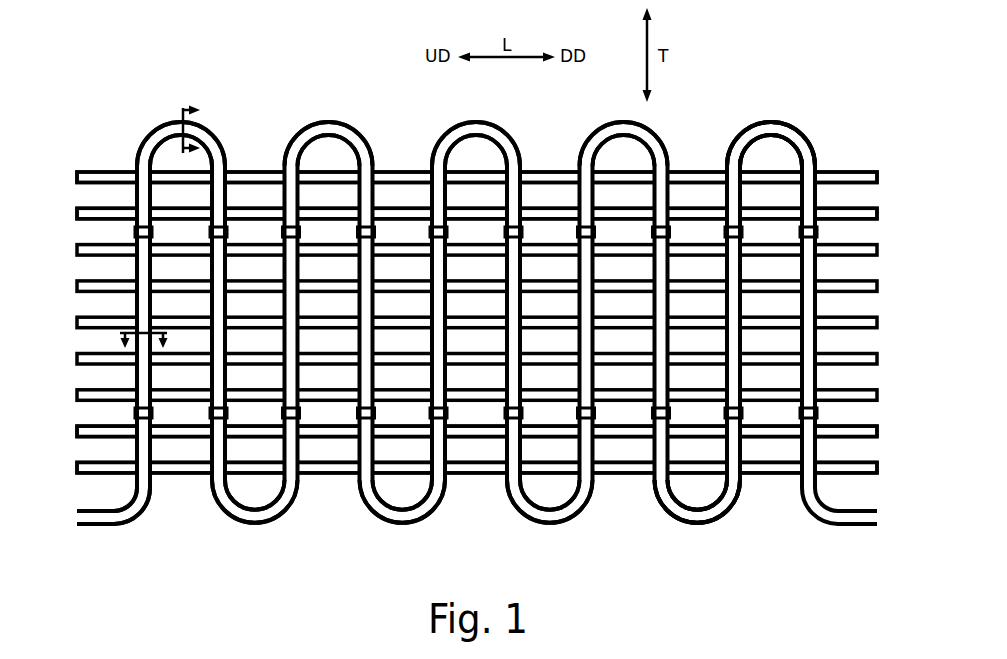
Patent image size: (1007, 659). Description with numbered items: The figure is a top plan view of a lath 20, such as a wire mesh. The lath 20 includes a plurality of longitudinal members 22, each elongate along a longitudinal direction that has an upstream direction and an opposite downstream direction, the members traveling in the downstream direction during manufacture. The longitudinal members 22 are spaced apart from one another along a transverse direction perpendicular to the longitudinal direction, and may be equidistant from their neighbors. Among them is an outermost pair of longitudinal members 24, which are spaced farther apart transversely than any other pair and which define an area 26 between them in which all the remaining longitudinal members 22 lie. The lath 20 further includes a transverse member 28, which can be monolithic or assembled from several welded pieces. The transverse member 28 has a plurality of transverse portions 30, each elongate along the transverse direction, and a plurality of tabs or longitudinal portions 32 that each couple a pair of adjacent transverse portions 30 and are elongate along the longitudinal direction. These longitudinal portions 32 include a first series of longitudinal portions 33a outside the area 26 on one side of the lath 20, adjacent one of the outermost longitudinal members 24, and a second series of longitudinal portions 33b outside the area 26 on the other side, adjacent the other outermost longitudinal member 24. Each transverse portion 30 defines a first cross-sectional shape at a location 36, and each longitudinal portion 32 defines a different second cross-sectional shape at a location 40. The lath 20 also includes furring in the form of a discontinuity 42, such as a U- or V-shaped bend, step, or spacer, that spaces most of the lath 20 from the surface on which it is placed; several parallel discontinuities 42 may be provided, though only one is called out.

The lath 20 is at (490, 339).
The longitudinal members 22 is at (86, 462).
The outermost pair of longitudinal members 24 is at (866, 473).
The area 26 is at (885, 193).
The transverse member 28 is at (104, 532).
The transverse portions 30 is at (145, 378).
The longitudinal portions 32 is at (172, 122).
The first series of longitudinal portions 33a is at (778, 128).
The second series of longitudinal portions 33b is at (698, 522).
The location 36 is at (146, 333).
The location 40 is at (180, 126).
The discontinuity 42 is at (735, 227).